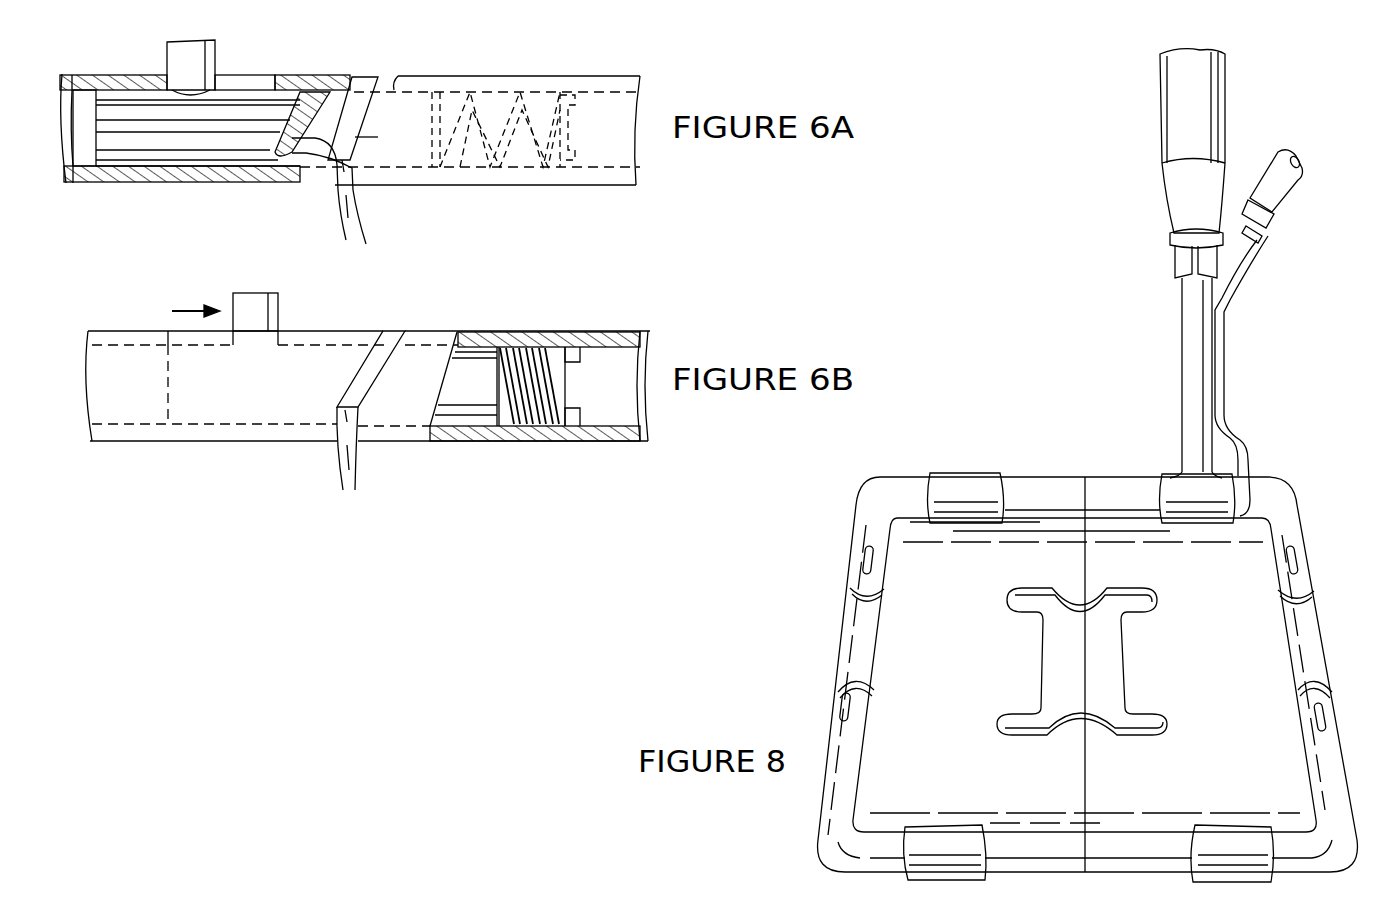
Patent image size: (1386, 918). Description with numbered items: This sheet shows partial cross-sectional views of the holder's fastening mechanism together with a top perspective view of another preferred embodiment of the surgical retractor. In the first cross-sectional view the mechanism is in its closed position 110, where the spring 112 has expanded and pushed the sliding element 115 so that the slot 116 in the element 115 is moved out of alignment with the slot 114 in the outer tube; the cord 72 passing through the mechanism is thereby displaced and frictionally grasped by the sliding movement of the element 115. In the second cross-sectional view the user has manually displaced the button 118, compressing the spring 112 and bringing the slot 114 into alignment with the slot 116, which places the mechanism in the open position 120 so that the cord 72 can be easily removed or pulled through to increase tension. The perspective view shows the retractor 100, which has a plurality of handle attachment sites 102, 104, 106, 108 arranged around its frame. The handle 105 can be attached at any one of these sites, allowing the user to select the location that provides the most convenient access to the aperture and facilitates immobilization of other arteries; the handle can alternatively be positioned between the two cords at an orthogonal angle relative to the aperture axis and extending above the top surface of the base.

In FIG. 6A, the closed position 110 is at (656, 68).
In FIG. 6A, the spring 112 is at (500, 95).
In FIG. 6B, the spring 112 is at (552, 360).
In FIG. 6A, the slot in the outer tube 114 is at (395, 78).
In FIG. 6A, the element 115 is at (218, 125).
In FIG. 6B, the element 115 is at (470, 370).
In FIG. 6A, the slot in element 116 is at (322, 100).
In FIG. 6A, the manual displacement member 118 is at (218, 62).
In FIG. 6B, the manual displacement member 118 is at (280, 318).
In FIG. 6B, the open position 120 is at (660, 296).
In FIG. 6A, the cord 72 is at (366, 210).
In FIG. 6B, the cord 72 is at (362, 466).
In FIG. 8, the retractor 100 is at (1052, 408).
In FIG. 8, the handle attachment site 102 is at (976, 474).
In FIG. 8, the handle attachment site 104 is at (1166, 474).
In FIG. 8, the handle 105 is at (1182, 332).
In FIG. 8, the handle attachment site 106 is at (950, 838).
In FIG. 8, the handle attachment site 108 is at (1232, 838).